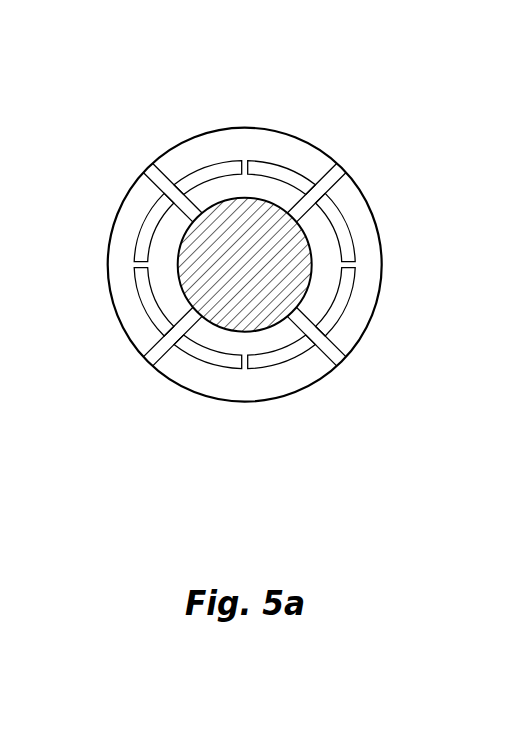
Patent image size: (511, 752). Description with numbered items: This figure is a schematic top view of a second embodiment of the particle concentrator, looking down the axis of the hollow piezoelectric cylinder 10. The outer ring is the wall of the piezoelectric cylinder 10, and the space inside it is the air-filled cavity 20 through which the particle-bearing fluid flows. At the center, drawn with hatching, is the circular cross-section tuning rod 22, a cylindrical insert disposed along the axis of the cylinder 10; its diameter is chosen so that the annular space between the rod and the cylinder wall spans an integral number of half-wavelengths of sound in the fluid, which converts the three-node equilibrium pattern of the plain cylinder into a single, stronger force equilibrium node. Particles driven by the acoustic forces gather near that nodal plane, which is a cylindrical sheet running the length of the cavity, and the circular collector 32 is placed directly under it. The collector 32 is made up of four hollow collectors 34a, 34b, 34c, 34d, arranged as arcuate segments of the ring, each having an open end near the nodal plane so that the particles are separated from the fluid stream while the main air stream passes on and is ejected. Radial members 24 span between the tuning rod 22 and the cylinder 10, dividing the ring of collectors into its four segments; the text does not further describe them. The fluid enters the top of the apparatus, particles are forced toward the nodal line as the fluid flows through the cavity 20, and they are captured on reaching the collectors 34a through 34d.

The piezoelectric cylinder 10 is at (246, 256).
The air-filled cavity 20 is at (305, 157).
The tuning rod 22 is at (257, 268).
The radial ribs 24 is at (172, 174).
The circular collector 32 is at (227, 159).
The hollow collector 34a is at (354, 233).
The hollow collector 34b is at (347, 315).
The hollow collector 34c is at (138, 308).
The hollow collector 34d is at (135, 230).